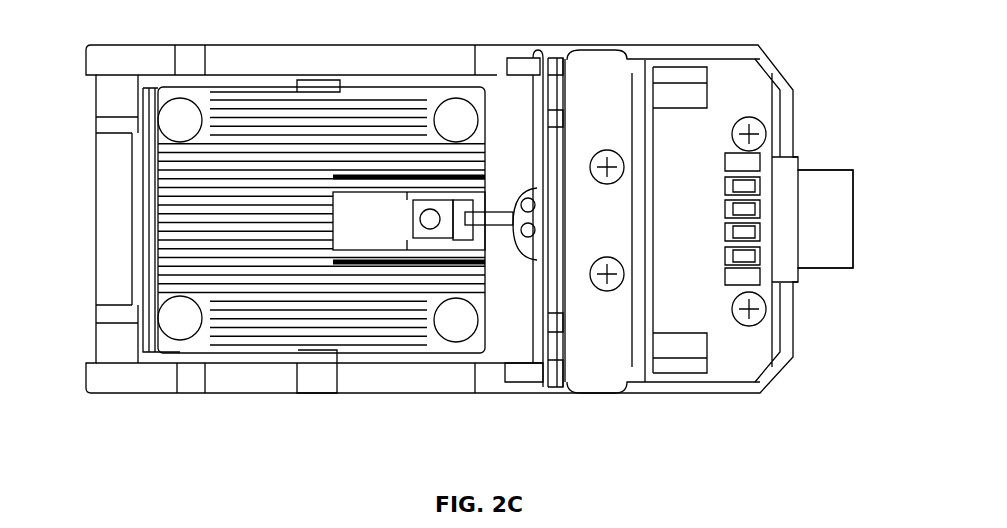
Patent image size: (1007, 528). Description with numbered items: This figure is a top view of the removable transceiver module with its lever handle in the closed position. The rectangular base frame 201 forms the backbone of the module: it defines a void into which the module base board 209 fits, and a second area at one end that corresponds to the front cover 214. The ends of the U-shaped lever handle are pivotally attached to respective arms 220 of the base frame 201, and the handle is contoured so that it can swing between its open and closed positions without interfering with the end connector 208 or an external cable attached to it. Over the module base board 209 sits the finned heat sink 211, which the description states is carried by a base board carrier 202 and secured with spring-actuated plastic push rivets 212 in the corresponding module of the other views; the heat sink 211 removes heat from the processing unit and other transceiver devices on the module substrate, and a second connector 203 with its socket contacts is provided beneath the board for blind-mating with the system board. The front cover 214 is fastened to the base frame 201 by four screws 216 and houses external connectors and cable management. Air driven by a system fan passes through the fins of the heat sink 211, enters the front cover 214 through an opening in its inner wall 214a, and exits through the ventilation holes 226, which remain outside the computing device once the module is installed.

The base frame 201 is at (117, 225).
The heat sink body 202 is at (382, 83).
The fastening assembly 203 is at (382, 217).
The end connector 208 is at (818, 188).
The module base board 209 is at (522, 118).
The heat sink 211 is at (283, 105).
The mounting holes 212 is at (190, 117).
The front cover 214 is at (737, 90).
The inner wall 214a is at (557, 283).
The screws 216 is at (742, 315).
The arms 220 is at (110, 95).
The ventilation holes 226 is at (742, 252).